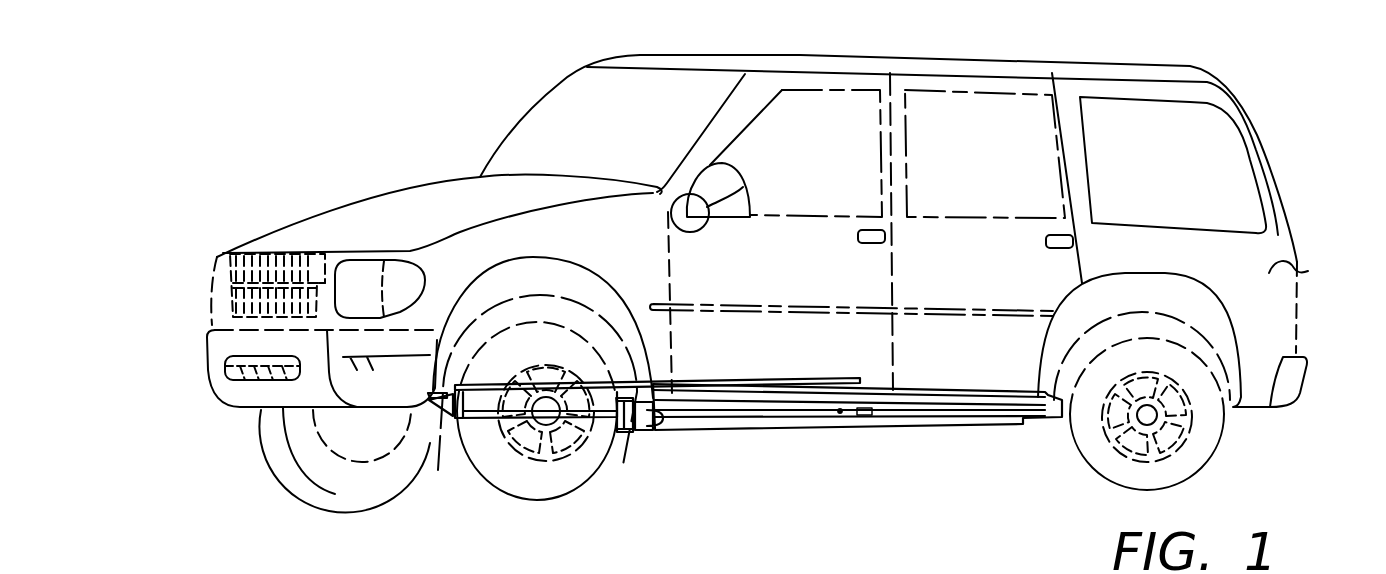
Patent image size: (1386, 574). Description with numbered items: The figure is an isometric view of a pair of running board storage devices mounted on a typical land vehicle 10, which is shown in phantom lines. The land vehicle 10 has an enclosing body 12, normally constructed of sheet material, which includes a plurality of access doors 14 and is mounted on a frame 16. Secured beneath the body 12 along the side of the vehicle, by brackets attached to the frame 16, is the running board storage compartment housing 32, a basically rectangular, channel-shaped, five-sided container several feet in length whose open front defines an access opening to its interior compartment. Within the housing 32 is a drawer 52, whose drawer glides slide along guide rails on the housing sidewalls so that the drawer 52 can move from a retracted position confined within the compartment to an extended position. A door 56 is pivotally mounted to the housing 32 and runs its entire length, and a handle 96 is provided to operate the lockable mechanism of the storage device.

The land vehicle 10 is at (355, 198).
The body 12 is at (1310, 272).
The access doors 14 is at (770, 370).
The frame 16 is at (475, 412).
The running board storage compartment housing 32 is at (437, 405).
The drawer 52 is at (983, 432).
The door 56 is at (929, 432).
The handle 96 is at (863, 417).